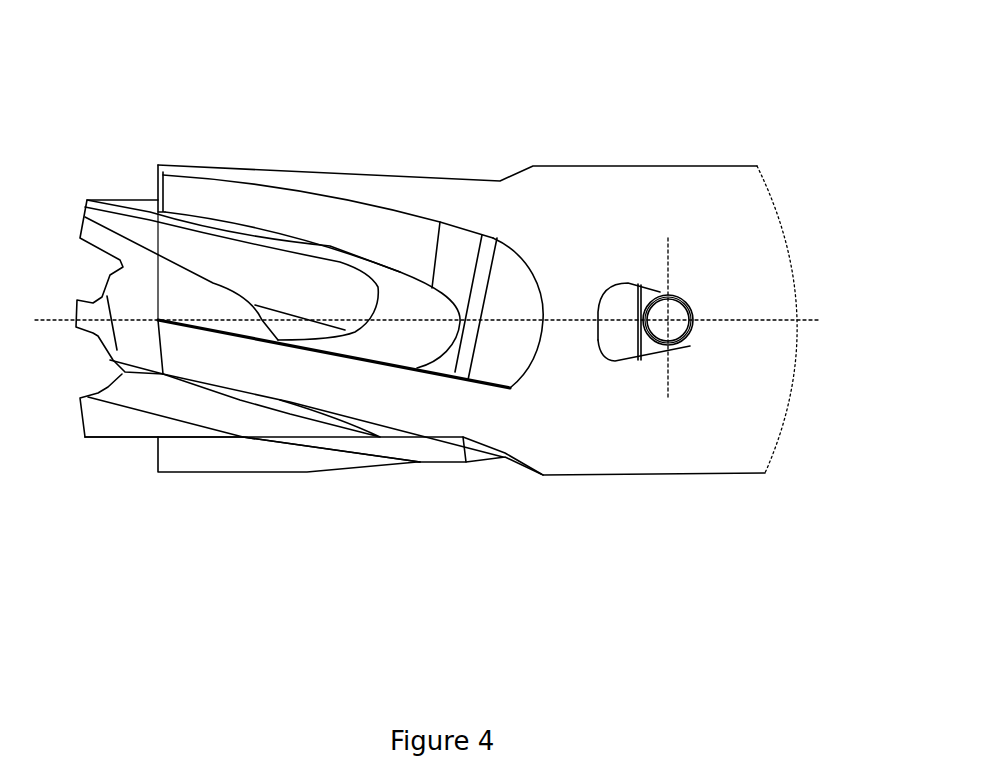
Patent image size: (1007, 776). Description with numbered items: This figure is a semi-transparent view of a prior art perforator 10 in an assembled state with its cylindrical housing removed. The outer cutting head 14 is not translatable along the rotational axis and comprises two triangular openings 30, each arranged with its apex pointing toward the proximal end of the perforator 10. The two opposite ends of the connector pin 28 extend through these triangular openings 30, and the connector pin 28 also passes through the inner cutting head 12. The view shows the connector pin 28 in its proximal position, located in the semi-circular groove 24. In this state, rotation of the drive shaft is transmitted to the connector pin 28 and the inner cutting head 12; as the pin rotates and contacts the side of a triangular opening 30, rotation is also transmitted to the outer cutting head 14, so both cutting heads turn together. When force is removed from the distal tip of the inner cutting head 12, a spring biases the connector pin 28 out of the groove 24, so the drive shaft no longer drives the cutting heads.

The perforator 10 is at (182, 143).
The inner cutting head 12 is at (111, 418).
The outer cutting head 14 is at (302, 452).
The semi-circular groove 24 is at (703, 357).
The connector pin 28 is at (678, 318).
The triangular opening 30 is at (620, 380).